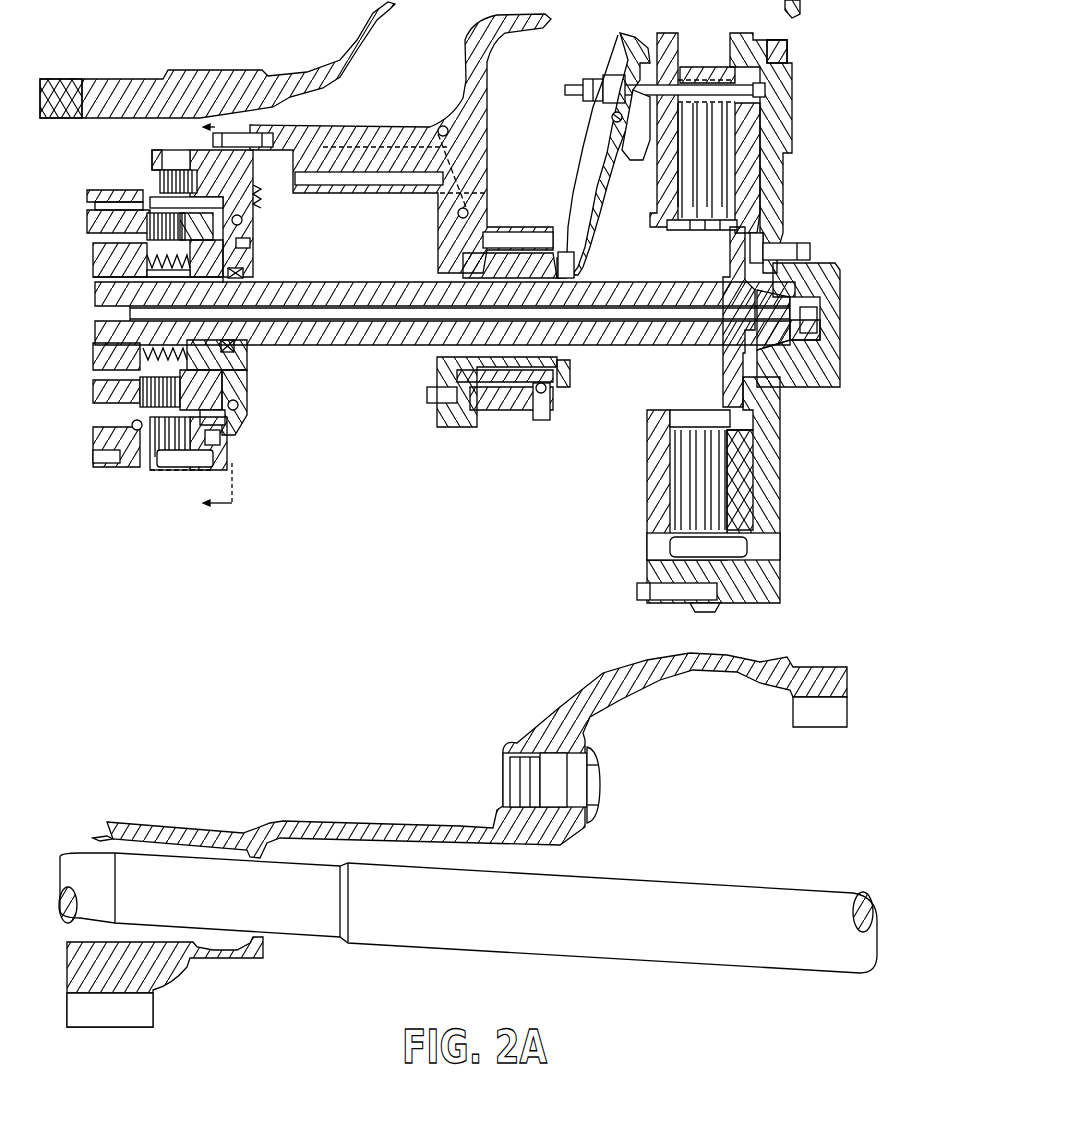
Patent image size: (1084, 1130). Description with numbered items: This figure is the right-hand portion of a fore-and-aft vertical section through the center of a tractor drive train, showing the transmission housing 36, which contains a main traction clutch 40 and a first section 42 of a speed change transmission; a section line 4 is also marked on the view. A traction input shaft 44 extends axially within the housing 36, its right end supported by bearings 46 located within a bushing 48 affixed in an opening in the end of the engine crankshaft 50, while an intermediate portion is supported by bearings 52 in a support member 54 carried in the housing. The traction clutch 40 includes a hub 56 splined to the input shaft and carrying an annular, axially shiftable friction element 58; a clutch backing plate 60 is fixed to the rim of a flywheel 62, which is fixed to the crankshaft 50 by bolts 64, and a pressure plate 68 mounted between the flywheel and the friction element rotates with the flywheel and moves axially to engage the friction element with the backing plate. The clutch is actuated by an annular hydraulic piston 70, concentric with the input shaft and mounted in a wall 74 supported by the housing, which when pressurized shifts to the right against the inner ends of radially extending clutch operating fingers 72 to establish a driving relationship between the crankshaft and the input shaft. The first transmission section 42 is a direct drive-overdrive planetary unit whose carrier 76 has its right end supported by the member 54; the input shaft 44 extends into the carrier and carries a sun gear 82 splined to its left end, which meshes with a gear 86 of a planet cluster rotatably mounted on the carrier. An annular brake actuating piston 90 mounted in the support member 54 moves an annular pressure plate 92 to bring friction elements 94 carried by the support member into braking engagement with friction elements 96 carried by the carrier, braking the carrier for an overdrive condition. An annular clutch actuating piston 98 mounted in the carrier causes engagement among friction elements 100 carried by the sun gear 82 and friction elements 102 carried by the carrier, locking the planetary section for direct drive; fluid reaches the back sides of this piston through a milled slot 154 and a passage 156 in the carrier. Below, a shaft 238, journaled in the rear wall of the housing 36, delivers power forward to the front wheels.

The transmission housing 36 is at (208, 74).
The section line 4 is at (208, 314).
The main traction clutch 40 is at (620, 523).
The first section of speed change transmission 42 is at (165, 337).
The traction input shaft 44 is at (356, 333).
The bearings 46 is at (838, 290).
The bushing 48 is at (822, 336).
The engine crankshaft 50 is at (836, 322).
The bearings 52 is at (240, 348).
The support member 54 is at (246, 173).
The hub 56 is at (728, 272).
The friction element 58 is at (700, 214).
The clutch backing plate 60 is at (660, 205).
The flywheel 62 is at (780, 115).
The bolts 64 is at (800, 247).
The pressure plate 68 is at (762, 181).
The annular hydraulic piston 70 is at (460, 270).
The clutch operating fingers 72 is at (574, 196).
The wall 74 is at (478, 181).
The carrier 76 is at (95, 190).
The sun gear 82 is at (92, 247).
The gear 86 is at (105, 465).
The annular brake actuating piston 90 is at (222, 437).
The annular pressure plate 92 is at (192, 472).
The friction elements 94 is at (178, 455).
The friction elements 96 is at (228, 416).
The annular clutch actuating piston 98 is at (243, 221).
The friction elements 100 is at (98, 260).
The friction elements 102 is at (152, 202).
The milled slot 154 is at (251, 245).
The passage 156 is at (246, 272).
The shaft 238 is at (472, 945).